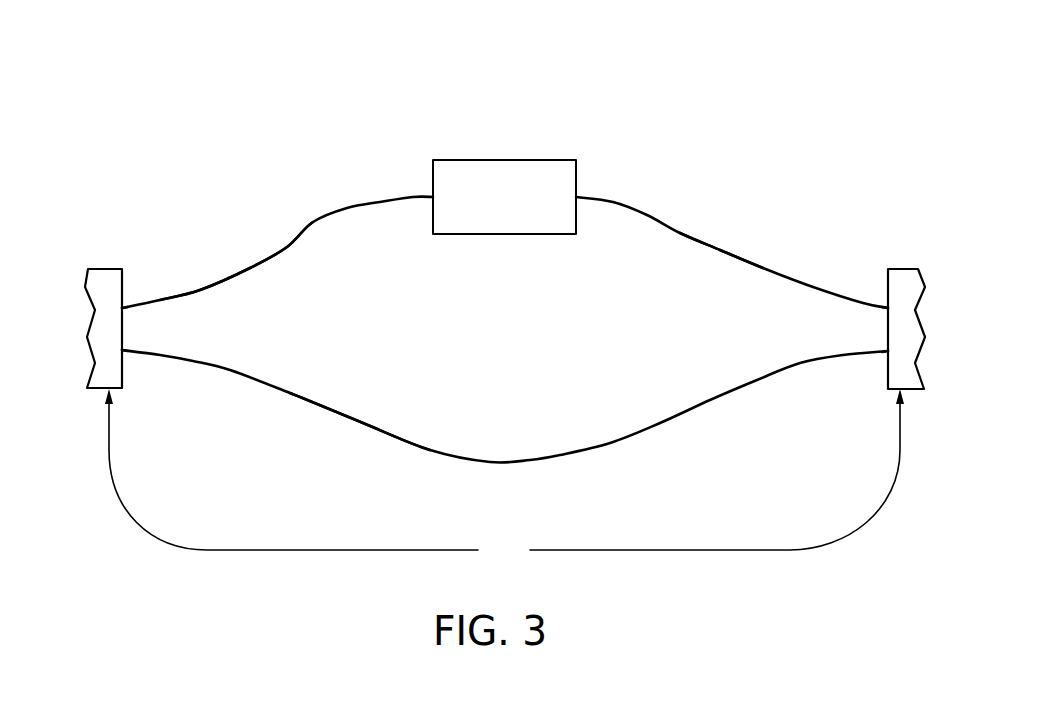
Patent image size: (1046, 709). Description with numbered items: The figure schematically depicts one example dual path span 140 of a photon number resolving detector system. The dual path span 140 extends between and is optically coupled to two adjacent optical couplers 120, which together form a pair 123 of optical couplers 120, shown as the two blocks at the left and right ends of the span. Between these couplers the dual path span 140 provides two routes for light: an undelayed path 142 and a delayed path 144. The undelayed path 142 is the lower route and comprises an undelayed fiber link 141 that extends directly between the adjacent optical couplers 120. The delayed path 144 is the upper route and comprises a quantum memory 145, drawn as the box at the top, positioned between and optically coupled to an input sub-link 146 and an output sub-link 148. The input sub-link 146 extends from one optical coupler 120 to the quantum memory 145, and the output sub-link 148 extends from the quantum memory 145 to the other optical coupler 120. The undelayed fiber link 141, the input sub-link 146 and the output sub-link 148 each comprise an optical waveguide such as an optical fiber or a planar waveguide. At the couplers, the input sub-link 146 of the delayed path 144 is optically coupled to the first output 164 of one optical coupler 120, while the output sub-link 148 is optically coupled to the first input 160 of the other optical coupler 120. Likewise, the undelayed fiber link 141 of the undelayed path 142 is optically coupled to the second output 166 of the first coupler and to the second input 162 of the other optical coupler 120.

The optical coupler 120 is at (106, 269).
The pair of optical couplers 123 is at (504, 478).
The dual path span 140 is at (818, 128).
The undelayed fiber link 141 is at (364, 421).
The undelayed path 142 is at (293, 405).
The delayed path 144 is at (339, 206).
The quantum memory 145 is at (498, 160).
The input sub-link 146 is at (287, 253).
The output sub-link 148 is at (722, 252).
The first input 160 is at (886, 304).
The second input 162 is at (886, 355).
The first output 164 is at (125, 304).
The second output 166 is at (125, 354).